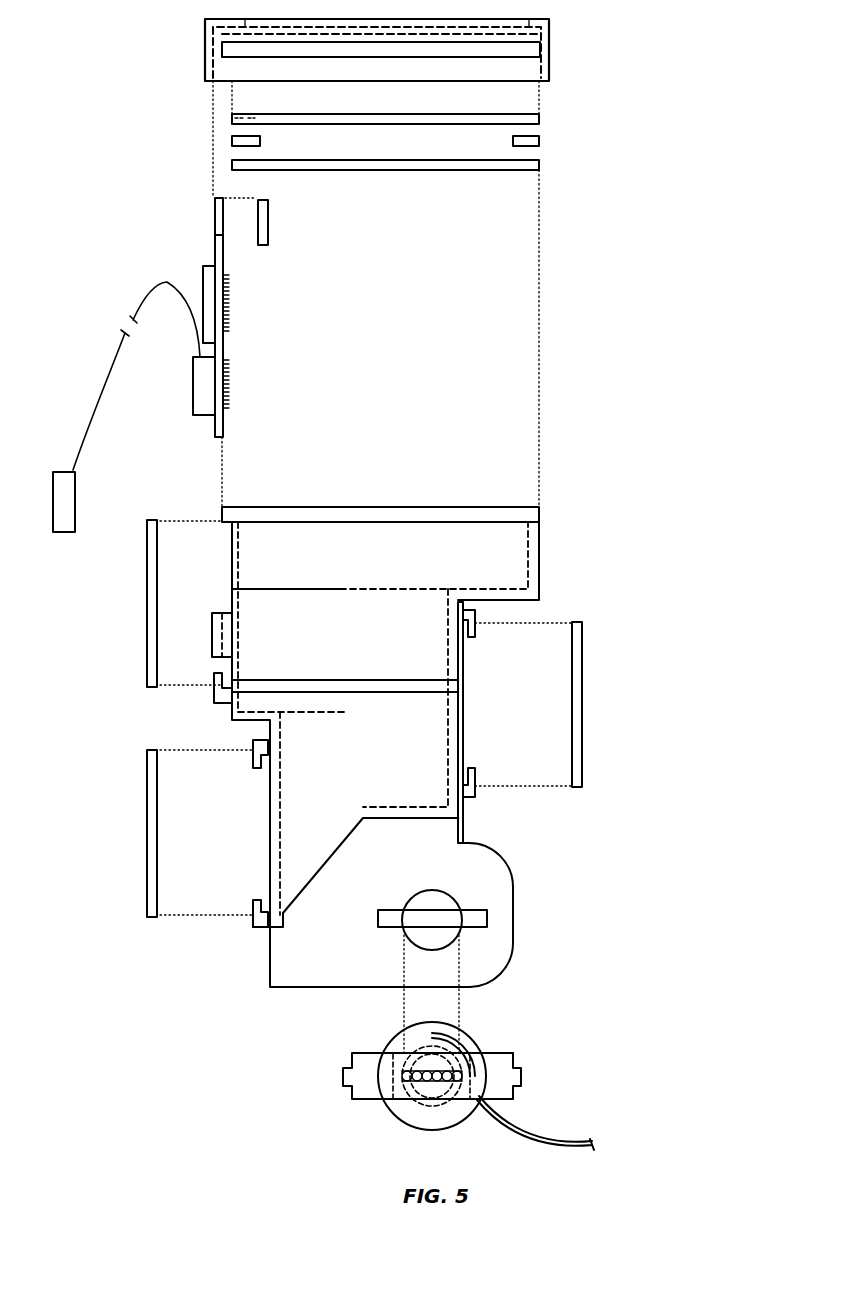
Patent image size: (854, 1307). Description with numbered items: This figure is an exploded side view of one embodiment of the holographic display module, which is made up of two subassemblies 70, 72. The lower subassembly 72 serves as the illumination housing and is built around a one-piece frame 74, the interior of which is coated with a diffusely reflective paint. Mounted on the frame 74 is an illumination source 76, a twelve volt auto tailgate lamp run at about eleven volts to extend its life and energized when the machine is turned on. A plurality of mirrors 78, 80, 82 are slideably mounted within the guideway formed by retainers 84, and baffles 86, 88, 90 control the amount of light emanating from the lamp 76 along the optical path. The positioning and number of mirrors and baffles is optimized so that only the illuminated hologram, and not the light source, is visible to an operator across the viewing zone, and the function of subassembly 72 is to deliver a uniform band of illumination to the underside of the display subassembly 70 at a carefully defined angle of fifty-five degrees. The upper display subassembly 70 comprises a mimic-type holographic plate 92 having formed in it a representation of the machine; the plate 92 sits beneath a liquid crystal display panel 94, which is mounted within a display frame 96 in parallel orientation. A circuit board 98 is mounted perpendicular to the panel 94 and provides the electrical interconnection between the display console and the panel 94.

The display subassembly 70 is at (190, 150).
The illumination housing subassembly 72 is at (622, 665).
The one-piece frame 74 is at (465, 810).
The illumination source 76 is at (472, 1047).
The mirror 78 is at (147, 842).
The mirror 80 is at (582, 745).
The mirror 82 is at (148, 565).
The retainers 84 is at (475, 618).
The baffle 86 is at (440, 777).
The baffle 88 is at (307, 712).
The baffle 90 is at (443, 582).
The holographic plate 92 is at (272, 170).
The liquid crystal display panel 94 is at (513, 120).
The display frame 96 is at (551, 43).
The circuit board 98 is at (203, 277).